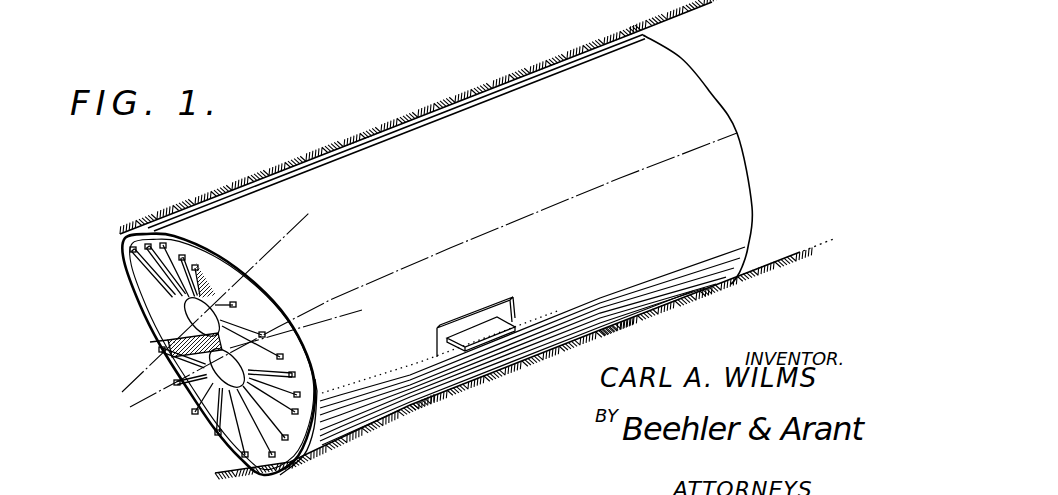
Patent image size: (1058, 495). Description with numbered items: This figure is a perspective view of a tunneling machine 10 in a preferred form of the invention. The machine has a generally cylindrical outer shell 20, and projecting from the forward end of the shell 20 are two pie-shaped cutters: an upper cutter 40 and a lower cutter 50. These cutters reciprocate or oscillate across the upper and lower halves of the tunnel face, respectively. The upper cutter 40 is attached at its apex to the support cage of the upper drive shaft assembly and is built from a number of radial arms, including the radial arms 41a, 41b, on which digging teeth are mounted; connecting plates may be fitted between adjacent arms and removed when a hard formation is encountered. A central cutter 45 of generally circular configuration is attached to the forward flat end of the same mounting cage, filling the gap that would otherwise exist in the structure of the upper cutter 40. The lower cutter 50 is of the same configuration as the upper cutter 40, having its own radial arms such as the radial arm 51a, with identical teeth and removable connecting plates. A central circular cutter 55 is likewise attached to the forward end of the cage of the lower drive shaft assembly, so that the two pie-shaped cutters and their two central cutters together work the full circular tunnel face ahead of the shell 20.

The tunneling machine 10 is at (395, 108).
The outer shell 20 is at (711, 92).
The upper cutter 40 is at (162, 299).
The radial arm 41a is at (140, 285).
The radial arm 41b is at (160, 278).
The central cutter 45 is at (190, 313).
The lower cutter 50 is at (210, 422).
The radial arm 51a is at (278, 377).
The central circular cutter 55 is at (223, 380).